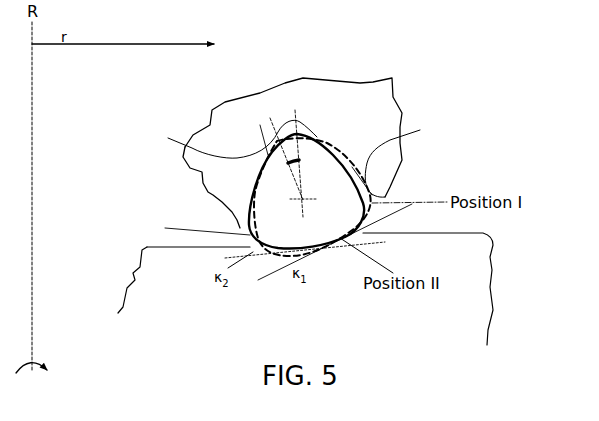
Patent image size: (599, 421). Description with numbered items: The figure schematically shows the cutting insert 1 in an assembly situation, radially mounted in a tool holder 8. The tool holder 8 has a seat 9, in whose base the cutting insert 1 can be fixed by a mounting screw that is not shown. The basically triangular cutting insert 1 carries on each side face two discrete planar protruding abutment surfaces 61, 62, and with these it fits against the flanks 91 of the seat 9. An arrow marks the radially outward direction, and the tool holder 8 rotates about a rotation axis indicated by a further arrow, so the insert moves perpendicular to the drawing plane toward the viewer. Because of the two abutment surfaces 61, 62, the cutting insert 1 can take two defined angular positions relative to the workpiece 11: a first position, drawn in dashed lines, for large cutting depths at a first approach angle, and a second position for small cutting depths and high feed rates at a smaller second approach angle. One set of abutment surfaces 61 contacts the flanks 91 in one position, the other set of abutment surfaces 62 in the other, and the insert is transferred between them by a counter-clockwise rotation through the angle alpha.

The cutting insert 1 is at (273, 171).
The tool holder 8 is at (367, 120).
The seat 9 is at (282, 132).
The workpiece 11 is at (253, 324).
The abutment surface 61 is at (247, 191).
The abutment surface 62 is at (259, 147).
The flanks 91 is at (294, 158).